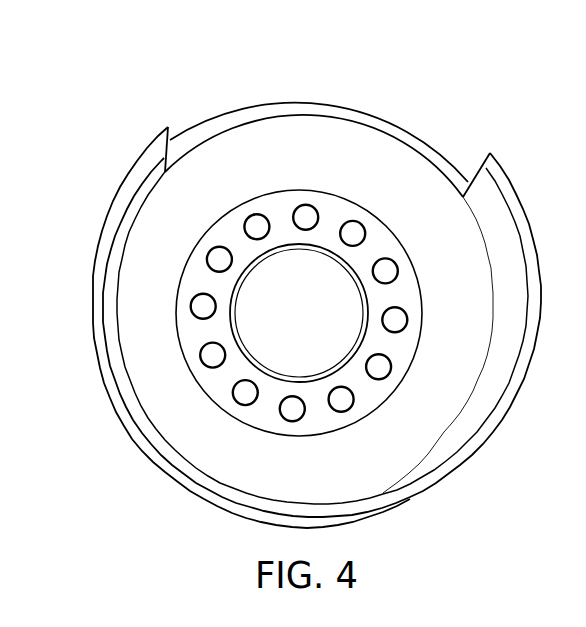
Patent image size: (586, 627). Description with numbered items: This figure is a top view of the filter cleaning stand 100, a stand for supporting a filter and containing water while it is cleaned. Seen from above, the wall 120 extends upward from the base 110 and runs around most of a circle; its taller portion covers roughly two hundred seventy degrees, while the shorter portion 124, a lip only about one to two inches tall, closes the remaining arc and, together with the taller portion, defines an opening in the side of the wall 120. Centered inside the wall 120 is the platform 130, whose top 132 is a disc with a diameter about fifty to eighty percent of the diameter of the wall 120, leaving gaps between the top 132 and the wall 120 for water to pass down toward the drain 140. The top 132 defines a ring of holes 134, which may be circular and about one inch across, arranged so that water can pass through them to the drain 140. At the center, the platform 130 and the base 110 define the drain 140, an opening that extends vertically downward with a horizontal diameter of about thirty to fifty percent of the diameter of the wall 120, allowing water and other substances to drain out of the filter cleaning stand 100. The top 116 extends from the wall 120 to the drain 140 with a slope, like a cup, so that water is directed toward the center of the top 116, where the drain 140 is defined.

The filter cleaning stand 100 is at (129, 31).
The base 110 is at (168, 386).
The top 116 is at (227, 443).
The wall 120 is at (138, 168).
The shorter portion 124 is at (433, 160).
The platform 130 is at (207, 283).
The top 132 is at (190, 328).
The holes 134 is at (200, 301).
The drain 140 is at (343, 312).